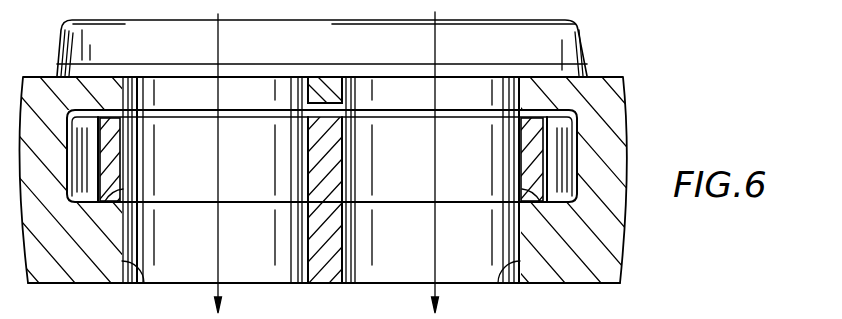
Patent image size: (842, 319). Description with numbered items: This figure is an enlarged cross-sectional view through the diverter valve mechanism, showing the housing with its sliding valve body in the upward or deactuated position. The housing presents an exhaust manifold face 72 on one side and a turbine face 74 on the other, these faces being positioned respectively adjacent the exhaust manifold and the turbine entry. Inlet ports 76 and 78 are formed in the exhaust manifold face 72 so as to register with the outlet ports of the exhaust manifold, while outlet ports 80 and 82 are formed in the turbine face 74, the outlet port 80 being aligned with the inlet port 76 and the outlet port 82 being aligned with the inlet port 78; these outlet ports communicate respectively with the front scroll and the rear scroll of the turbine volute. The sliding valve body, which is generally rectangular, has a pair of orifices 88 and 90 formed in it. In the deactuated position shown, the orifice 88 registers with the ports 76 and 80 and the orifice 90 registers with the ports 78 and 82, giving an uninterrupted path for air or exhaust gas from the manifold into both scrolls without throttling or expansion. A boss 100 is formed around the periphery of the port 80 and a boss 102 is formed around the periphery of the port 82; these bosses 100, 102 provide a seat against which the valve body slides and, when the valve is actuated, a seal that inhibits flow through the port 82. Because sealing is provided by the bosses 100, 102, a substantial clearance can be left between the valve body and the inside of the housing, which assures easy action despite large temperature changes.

The exhaust manifold face 72 is at (605, 77).
The turbine face 74 is at (573, 283).
The inlet port 76 is at (510, 84).
The inlet port 78 is at (128, 97).
The outlet port 80 is at (498, 283).
The outlet port 82 is at (146, 283).
The orifice 88 is at (520, 152).
The orifice 90 is at (125, 148).
The boss 100 is at (542, 201).
The boss 102 is at (112, 200).